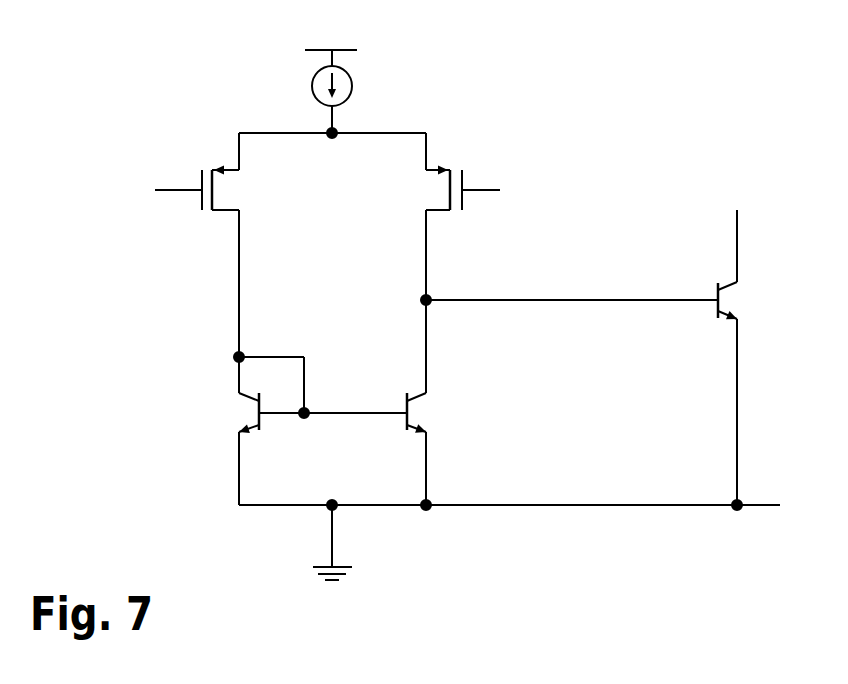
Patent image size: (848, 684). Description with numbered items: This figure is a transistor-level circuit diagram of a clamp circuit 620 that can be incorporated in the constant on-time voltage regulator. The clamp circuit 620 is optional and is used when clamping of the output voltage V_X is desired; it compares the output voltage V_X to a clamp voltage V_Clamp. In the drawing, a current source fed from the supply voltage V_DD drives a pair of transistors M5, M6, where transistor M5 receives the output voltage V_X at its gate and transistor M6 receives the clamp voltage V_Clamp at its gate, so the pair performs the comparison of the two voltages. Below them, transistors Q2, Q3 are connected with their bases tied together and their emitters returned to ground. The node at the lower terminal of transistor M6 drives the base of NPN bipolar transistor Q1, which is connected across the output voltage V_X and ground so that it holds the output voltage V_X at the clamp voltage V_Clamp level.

The clamp circuit 620 is at (662, 82).
The transistor M5 is at (214, 263).
The transistor M6 is at (447, 263).
The NPN bipolar transistor Q1 is at (741, 357).
The transistor Q2 is at (308, 428).
The transistor Q3 is at (431, 449).